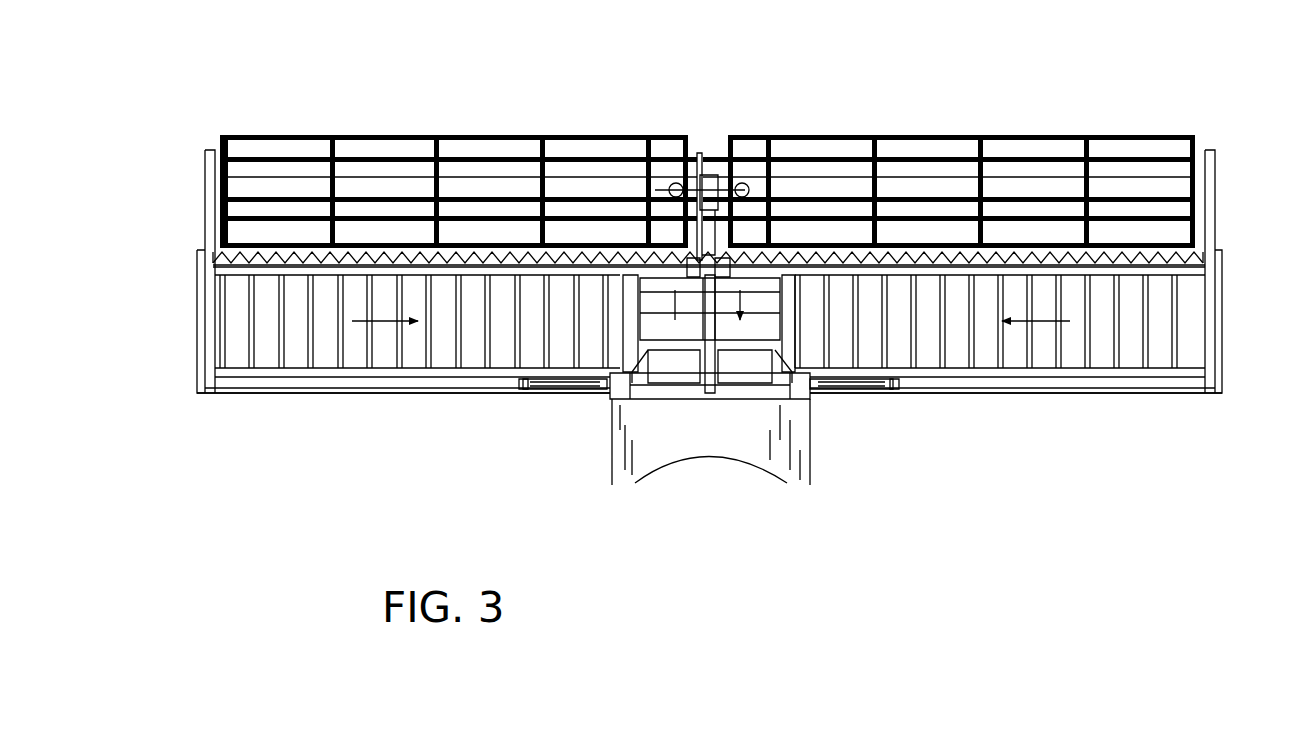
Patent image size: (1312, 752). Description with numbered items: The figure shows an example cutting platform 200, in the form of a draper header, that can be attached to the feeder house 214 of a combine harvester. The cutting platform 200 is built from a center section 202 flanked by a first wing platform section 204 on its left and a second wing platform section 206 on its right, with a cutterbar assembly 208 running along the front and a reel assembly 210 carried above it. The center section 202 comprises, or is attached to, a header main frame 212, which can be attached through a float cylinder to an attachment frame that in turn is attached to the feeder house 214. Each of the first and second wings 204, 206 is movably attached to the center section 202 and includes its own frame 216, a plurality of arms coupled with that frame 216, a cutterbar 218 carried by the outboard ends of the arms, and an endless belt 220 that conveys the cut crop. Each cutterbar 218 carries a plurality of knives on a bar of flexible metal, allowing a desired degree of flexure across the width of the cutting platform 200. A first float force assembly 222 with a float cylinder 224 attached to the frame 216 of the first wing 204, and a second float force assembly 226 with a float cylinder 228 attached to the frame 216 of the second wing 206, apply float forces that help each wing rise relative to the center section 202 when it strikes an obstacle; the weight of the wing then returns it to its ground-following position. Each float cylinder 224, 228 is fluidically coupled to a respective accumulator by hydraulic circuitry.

The cutting platform 200 is at (1102, 104).
The center section 202 is at (633, 305).
The first wing platform section 204 is at (347, 400).
The second wing platform section 206 is at (1076, 400).
The cutterbar assembly 208 is at (1160, 250).
The reel assembly 210 is at (740, 128).
The header main frame 212 is at (611, 399).
The feeder house 214 is at (815, 452).
The frame 216 is at (208, 394).
The cutterbar 218 is at (286, 256).
The endless belt 220 is at (272, 356).
The first float force assembly 222 is at (523, 390).
The float cylinder 224 is at (576, 391).
The second float force assembly 226 is at (896, 392).
The float cylinder 228 is at (846, 402).